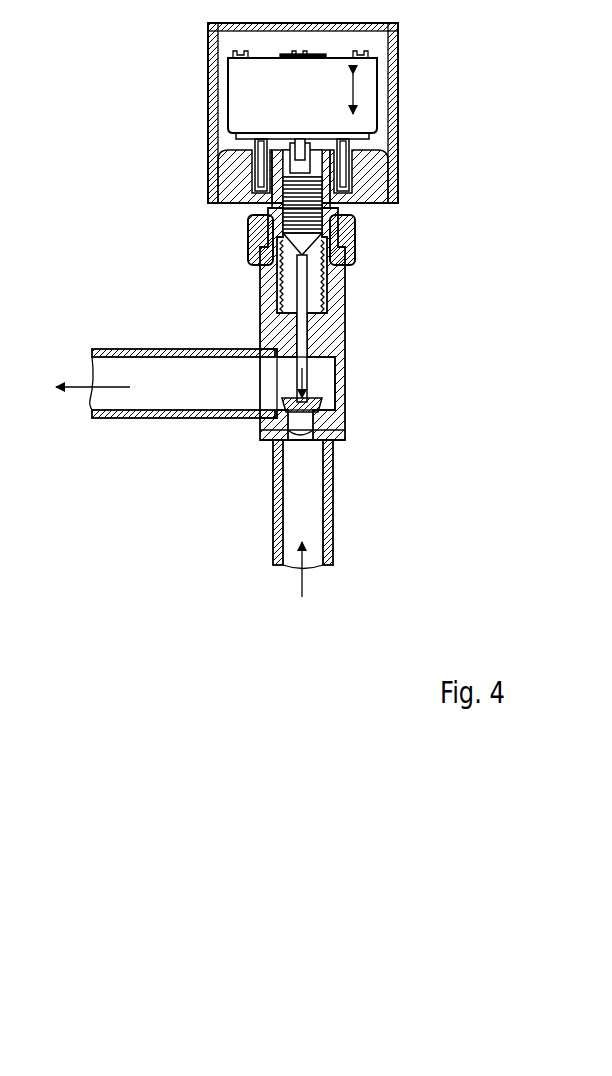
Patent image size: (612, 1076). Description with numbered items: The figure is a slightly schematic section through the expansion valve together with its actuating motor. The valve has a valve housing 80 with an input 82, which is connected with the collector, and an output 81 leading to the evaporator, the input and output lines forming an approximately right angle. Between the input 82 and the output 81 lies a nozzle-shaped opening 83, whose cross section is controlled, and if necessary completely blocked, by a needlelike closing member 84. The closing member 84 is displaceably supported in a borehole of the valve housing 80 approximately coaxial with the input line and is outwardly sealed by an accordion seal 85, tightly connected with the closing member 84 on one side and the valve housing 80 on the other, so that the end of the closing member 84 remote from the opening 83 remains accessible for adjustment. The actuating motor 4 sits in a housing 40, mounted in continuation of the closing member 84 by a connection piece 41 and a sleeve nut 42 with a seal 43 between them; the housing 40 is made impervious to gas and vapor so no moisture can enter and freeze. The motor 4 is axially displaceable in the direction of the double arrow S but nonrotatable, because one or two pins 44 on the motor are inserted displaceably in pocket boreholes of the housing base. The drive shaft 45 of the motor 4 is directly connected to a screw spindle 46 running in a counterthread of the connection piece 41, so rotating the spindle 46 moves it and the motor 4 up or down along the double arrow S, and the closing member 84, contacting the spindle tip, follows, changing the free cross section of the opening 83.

The housing 40 is at (398, 45).
The actuating motor 4 is at (250, 126).
The double arrow S is at (356, 93).
The pins 44 is at (258, 172).
The drive shaft 45 is at (302, 150).
The connection piece 41 is at (325, 212).
The screw spindle 46 is at (272, 208).
The seal 43 is at (258, 235).
The sleeve nut 42 is at (356, 245).
The accordion seal 85 is at (312, 284).
The valve housing 80 is at (322, 343).
The closing member 84 is at (307, 372).
The nozzle-shaped opening 83 is at (330, 432).
The output 81 is at (150, 400).
The input 82 is at (312, 523).